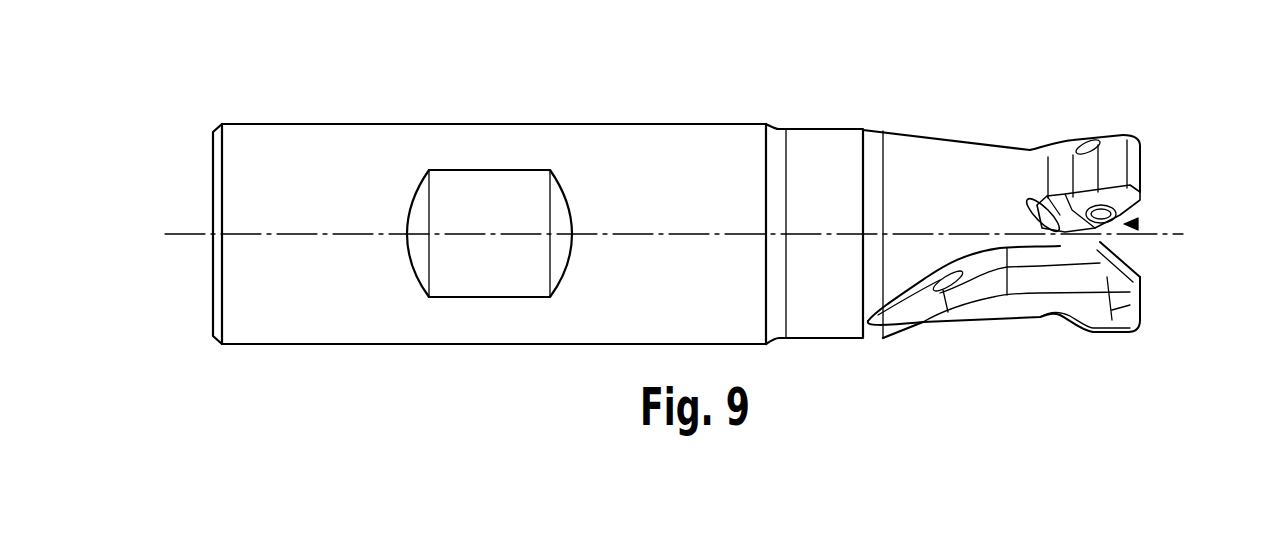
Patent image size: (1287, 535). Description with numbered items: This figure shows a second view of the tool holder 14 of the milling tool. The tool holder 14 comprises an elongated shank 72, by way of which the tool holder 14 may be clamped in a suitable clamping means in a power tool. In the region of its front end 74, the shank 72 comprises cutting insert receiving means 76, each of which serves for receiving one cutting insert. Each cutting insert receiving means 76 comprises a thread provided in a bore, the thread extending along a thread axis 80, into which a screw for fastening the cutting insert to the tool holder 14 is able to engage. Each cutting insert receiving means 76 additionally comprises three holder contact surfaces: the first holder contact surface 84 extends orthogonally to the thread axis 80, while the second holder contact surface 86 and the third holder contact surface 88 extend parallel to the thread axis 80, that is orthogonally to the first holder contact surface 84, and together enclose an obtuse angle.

The tool holder 14 is at (979, 107).
The shank 72 is at (665, 157).
The front end 74 is at (1240, 278).
The cutting insert receiving means 76 is at (1137, 224).
The thread axis 80 is at (1120, 307).
The first holder contact surface 84 is at (1140, 207).
The second holder contact surface 86 is at (1068, 250).
The third holder contact surface 88 is at (1097, 232).